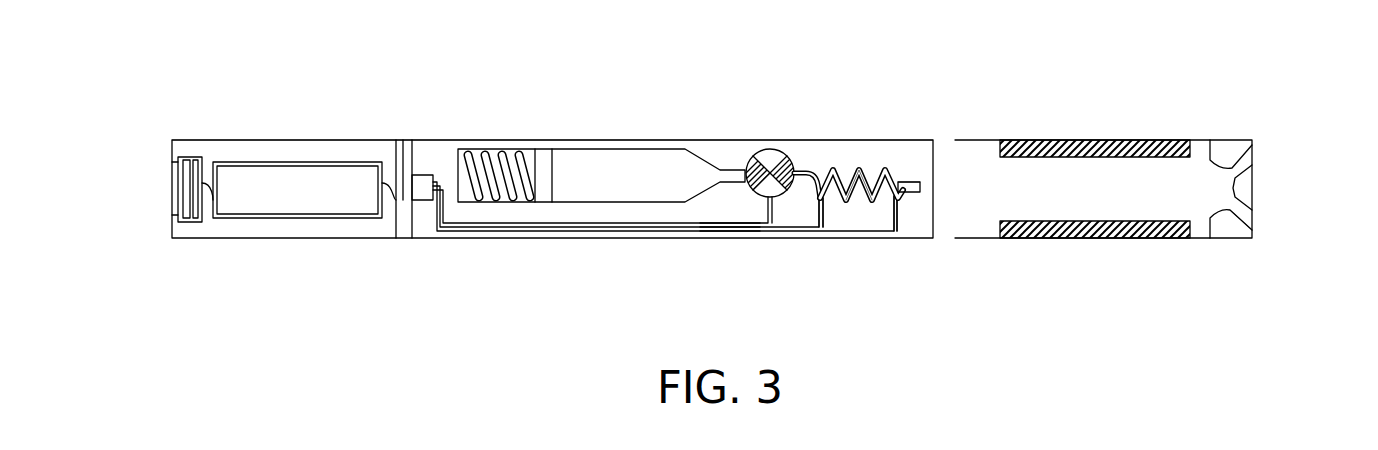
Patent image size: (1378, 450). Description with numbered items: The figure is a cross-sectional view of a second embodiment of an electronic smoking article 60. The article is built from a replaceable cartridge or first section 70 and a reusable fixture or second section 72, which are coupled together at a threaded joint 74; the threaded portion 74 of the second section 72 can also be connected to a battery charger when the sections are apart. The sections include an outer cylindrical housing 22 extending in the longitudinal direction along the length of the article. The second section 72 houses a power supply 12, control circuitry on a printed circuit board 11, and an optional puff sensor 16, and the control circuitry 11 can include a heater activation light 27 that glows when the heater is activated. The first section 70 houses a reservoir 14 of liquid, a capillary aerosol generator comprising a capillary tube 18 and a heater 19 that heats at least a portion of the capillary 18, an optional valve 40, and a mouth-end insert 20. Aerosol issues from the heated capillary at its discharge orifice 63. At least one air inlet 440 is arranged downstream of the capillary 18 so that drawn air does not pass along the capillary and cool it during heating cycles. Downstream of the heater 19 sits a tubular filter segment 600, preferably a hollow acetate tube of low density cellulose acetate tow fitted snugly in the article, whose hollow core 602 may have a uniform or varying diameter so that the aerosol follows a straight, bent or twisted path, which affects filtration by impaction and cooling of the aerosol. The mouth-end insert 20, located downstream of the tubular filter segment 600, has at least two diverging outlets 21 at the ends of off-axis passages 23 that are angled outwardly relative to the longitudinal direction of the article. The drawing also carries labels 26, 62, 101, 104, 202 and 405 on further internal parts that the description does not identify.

The control circuitry 11 is at (198, 222).
The power supply 12 is at (240, 162).
The reservoir 14 is at (628, 165).
The puff sensor 16 is at (186, 222).
The capillary tube 18 is at (858, 170).
The heater 19 is at (866, 205).
The mouth-end insert 20 is at (1252, 188).
The outlets 21 is at (1243, 160).
The outer cylindrical housing 22 is at (620, 238).
The off-axis passages 23 is at (1230, 211).
The electrical leads 26 is at (760, 238).
The heater activation light 27 is at (178, 192).
The valve 40 is at (770, 149).
The electronic smoking article 60 is at (727, 118).
The conduit 62 is at (812, 166).
The discharge orifice 63 is at (904, 182).
The first section 70 is at (1033, 140).
The second section 72 is at (322, 140).
The threaded joint 74 is at (401, 150).
The valve lead 101 is at (806, 200).
The terminal 104 is at (913, 193).
The sensor lead 202 is at (880, 205).
The heater 405 is at (545, 170).
The air inlet 440 is at (945, 140).
The tubular filter segment 600 is at (1117, 157).
The hollow core 602 is at (1155, 205).